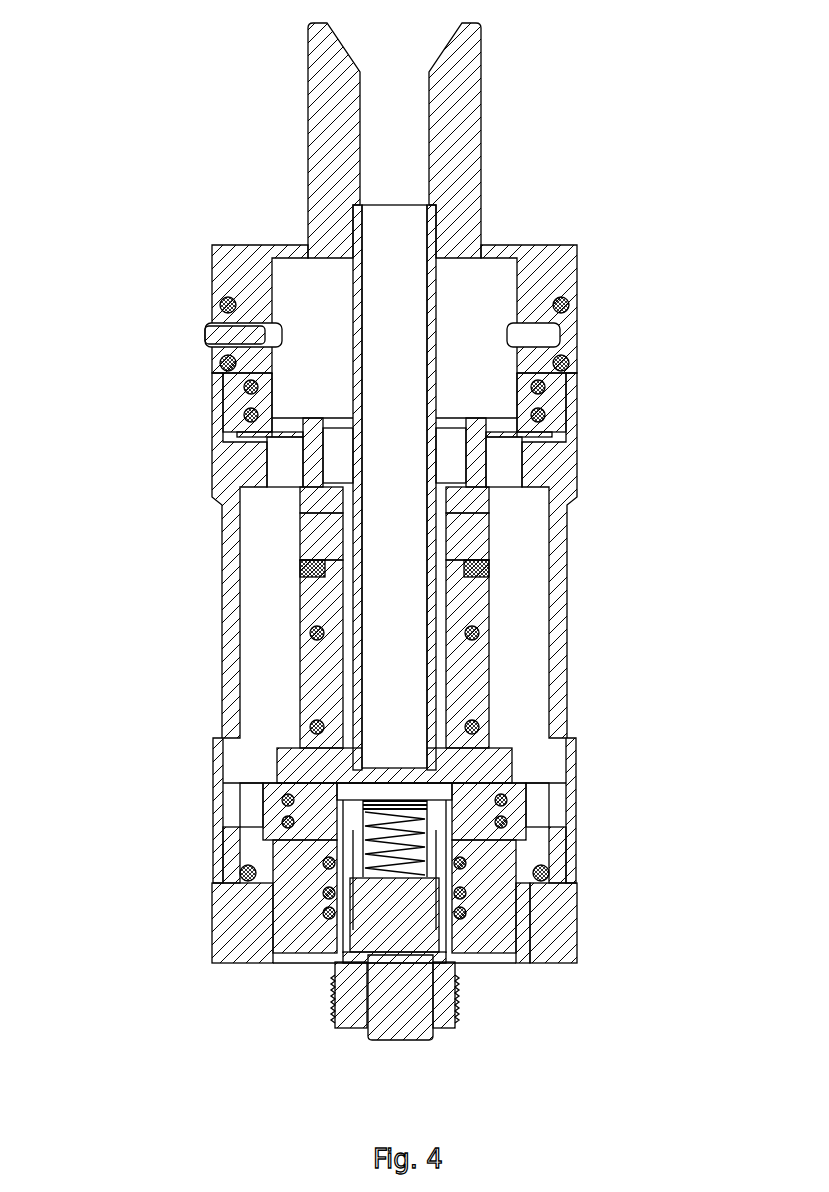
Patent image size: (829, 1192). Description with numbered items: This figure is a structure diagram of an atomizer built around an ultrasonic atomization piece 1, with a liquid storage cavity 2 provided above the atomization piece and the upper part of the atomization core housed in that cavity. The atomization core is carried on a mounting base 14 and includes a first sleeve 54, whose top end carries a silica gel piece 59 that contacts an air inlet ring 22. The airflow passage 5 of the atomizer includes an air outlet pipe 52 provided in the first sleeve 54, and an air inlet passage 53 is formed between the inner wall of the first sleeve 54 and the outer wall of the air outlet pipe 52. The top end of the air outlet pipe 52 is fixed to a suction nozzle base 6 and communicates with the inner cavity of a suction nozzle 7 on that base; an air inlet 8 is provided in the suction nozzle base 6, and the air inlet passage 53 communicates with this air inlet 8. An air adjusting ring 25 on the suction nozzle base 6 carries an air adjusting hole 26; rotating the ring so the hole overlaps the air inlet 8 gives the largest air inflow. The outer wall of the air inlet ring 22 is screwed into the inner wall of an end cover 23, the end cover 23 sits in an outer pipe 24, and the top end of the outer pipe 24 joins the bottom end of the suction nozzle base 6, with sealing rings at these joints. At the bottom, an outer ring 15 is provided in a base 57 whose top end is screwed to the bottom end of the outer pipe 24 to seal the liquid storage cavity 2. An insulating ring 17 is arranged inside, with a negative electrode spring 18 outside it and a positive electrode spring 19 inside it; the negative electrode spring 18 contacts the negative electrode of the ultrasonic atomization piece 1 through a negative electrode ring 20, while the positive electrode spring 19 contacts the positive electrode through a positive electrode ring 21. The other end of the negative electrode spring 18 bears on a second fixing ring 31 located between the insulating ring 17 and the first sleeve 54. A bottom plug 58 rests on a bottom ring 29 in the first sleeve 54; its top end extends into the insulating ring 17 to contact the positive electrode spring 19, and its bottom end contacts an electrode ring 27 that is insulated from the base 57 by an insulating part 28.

The ultrasonic atomization piece 1 is at (286, 791).
The liquid storage cavity 2 is at (517, 715).
The airflow passage 5 is at (518, 564).
The suction nozzle base 6 is at (548, 258).
The suction nozzle 7 is at (460, 155).
The air inlet 8 is at (263, 333).
The mounting base 14 is at (285, 763).
The outer ring 15 is at (292, 890).
The insulating ring 17 is at (545, 880).
The negative electrode spring 18 is at (545, 928).
The positive electrode spring 19 is at (540, 850).
The negative electrode ring 20 is at (262, 798).
The positive electrode ring 21 is at (455, 845).
The air inlet ring 22 is at (245, 400).
The end cover 23 is at (556, 380).
The outer pipe 24 is at (490, 497).
The air adjusting ring 25 is at (566, 305).
The air adjusting hole 26 is at (571, 333).
The electrode ring 27 is at (455, 1010).
The insulating part 28 is at (355, 1020).
The bottom ring 29 is at (234, 855).
The second fixing ring 31 is at (350, 948).
The air outlet pipe 52 is at (416, 463).
The air inlet passage 53 is at (390, 683).
The first sleeve 54 is at (438, 598).
The base 57 is at (548, 935).
The bottom plug 58 is at (400, 932).
The silica gel piece 59 is at (490, 527).